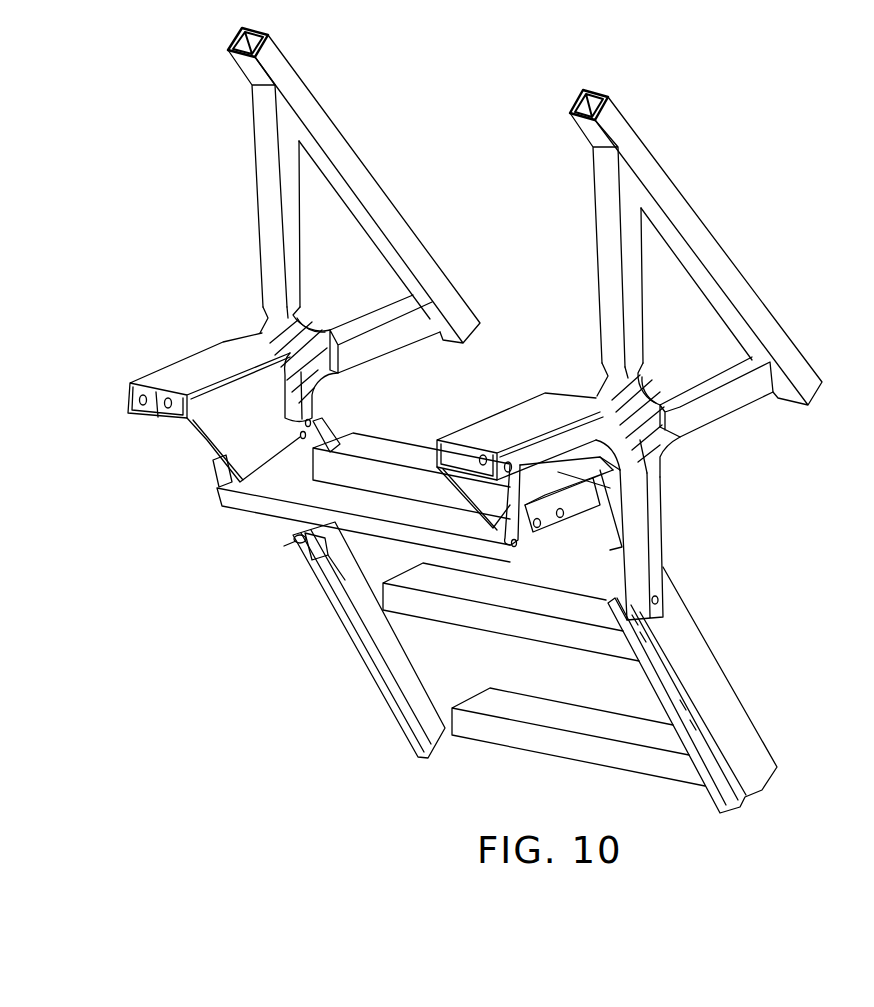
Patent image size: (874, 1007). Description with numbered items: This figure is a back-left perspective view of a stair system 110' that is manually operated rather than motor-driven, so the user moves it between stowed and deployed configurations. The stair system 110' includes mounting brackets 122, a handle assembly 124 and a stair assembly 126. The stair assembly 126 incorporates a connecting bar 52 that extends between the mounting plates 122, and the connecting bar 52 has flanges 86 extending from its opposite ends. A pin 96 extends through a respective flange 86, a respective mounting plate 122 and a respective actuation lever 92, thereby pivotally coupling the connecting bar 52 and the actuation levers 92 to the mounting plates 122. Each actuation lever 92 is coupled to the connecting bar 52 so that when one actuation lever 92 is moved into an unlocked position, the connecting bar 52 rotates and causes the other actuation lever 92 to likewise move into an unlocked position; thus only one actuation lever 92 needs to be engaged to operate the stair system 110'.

The stair system 110' is at (469, 420).
The handle assembly 124 is at (375, 151).
The mounting bracket 122 is at (168, 364).
The actuation lever 92 is at (210, 465).
The connecting bar 52 is at (266, 497).
The flange 86 is at (518, 556).
The pin 96 is at (518, 544).
The stair assembly 126 is at (772, 657).